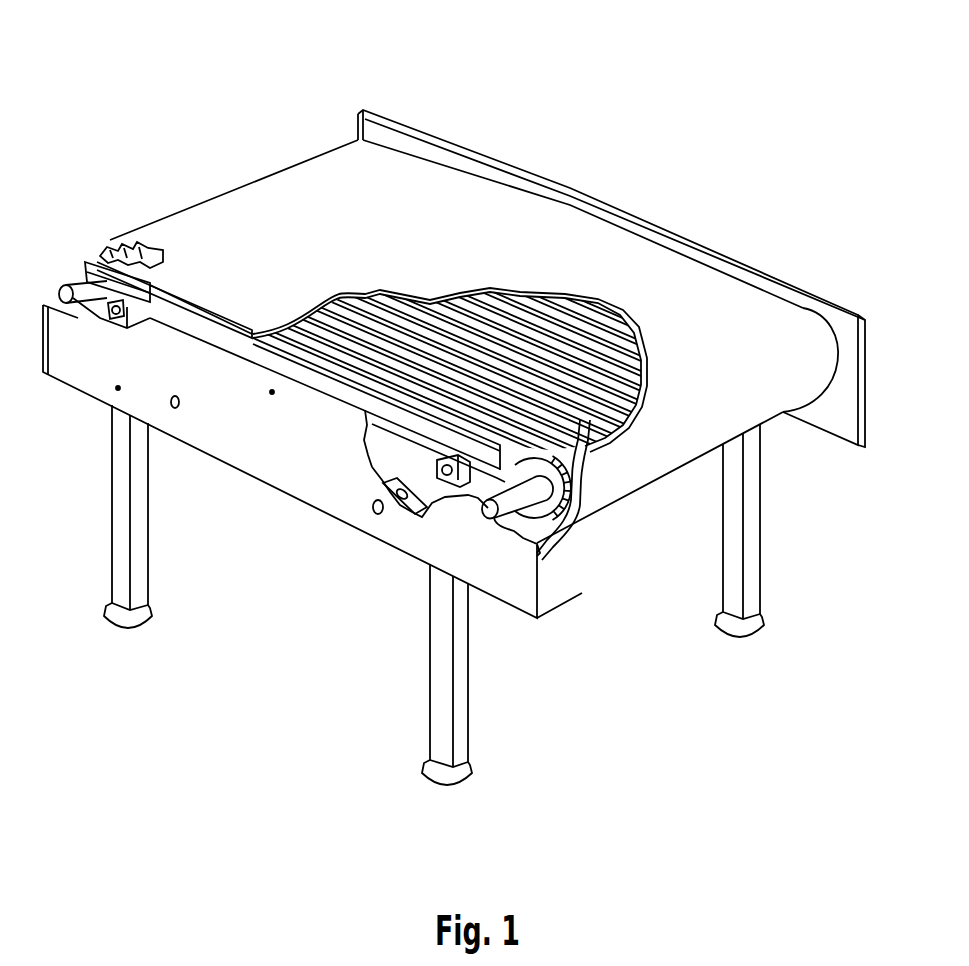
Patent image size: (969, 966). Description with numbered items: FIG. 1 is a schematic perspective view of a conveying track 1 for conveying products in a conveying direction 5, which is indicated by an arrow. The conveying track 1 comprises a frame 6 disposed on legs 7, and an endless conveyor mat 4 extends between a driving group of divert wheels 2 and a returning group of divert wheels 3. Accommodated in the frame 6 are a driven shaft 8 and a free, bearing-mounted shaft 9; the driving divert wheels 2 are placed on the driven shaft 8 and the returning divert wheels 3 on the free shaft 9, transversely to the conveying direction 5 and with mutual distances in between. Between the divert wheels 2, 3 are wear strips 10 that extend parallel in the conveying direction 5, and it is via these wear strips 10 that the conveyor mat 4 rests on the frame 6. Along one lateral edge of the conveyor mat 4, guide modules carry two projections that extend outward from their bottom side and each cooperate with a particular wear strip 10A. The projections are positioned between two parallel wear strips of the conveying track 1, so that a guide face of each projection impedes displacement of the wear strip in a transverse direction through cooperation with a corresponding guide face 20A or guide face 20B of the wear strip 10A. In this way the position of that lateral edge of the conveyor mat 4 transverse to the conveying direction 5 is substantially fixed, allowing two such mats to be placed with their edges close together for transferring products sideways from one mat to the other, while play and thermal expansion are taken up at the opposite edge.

The conveying track 1 is at (283, 665).
The driving divert wheels 2 is at (584, 420).
The returning divert wheels 3 is at (96, 258).
The endless conveyor mat 4 is at (258, 213).
The conveying direction 5 is at (695, 223).
The frame 6 is at (90, 377).
The legs 7 is at (120, 512).
The driven shaft 8 is at (492, 502).
The free, bearing-mounted shaft 9 is at (68, 300).
The wear strips 10 is at (537, 333).
The wear strip 10A is at (455, 398).
The guide face 20A is at (397, 400).
The guide face 20B is at (491, 432).